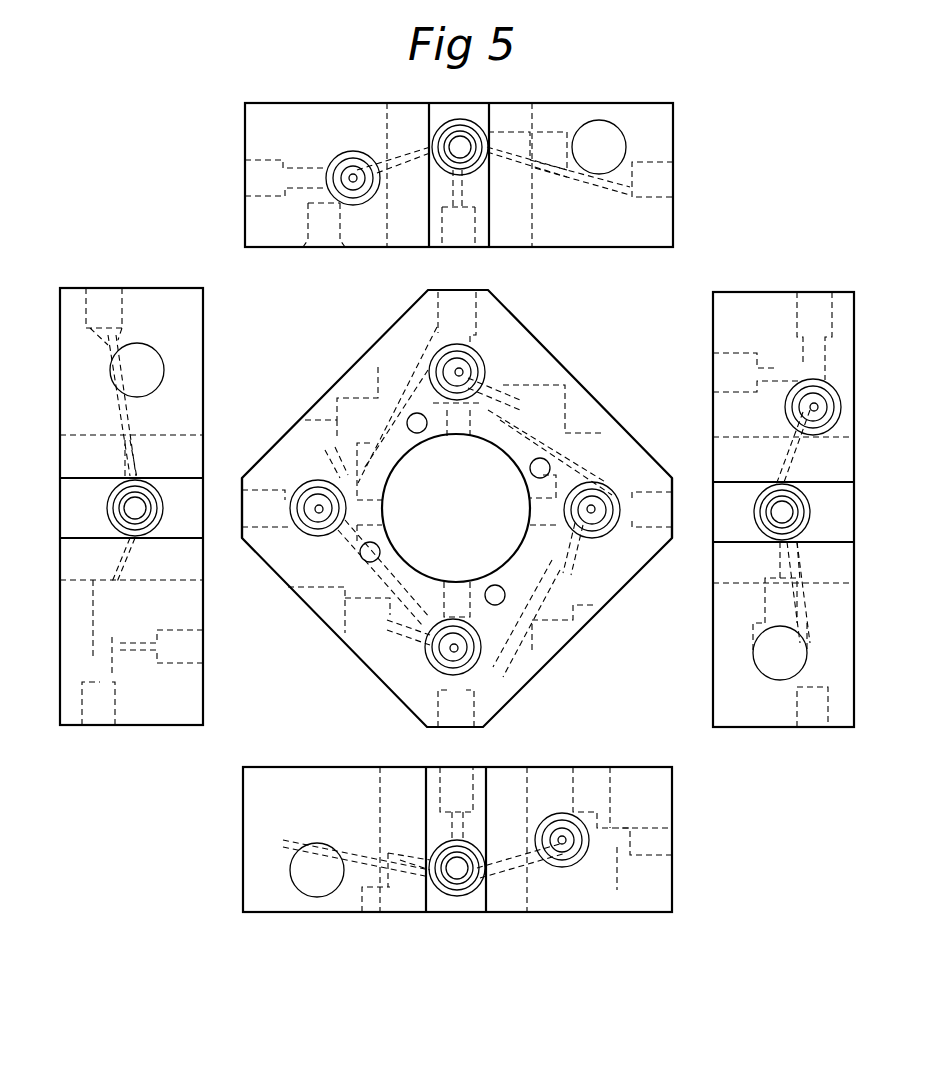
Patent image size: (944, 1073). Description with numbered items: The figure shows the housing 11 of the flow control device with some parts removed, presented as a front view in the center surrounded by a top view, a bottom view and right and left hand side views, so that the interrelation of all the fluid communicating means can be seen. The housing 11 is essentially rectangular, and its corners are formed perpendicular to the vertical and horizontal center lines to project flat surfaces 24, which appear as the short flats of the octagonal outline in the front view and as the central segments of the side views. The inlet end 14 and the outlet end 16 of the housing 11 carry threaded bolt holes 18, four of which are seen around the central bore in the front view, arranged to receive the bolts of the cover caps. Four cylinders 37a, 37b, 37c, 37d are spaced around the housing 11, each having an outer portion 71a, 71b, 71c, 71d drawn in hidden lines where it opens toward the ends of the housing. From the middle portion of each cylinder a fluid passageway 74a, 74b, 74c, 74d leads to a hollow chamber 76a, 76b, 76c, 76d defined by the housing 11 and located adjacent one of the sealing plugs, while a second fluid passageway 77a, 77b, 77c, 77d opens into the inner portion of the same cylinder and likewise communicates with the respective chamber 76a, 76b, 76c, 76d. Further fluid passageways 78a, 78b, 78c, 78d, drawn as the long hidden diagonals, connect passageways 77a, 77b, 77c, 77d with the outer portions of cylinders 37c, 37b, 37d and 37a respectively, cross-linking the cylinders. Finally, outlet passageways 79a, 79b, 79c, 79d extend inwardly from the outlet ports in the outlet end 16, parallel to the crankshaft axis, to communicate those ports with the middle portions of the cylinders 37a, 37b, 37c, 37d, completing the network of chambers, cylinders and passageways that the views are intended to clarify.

The housing 11 is at (646, 441).
The inlet end 14 is at (603, 106).
The outlet end 16 is at (592, 247).
The bolt holes 18 is at (410, 432).
The flat surfaces 24 is at (245, 128).
The cylinder 37a is at (470, 338).
The cylinder 37b is at (445, 680).
The cylinder 37c is at (620, 534).
The cylinder 37d is at (307, 145).
The outer portion 71a is at (478, 312).
The outer portion 71b is at (430, 708).
The outer portion 71c is at (660, 548).
The outer portion 71d is at (258, 468).
The fluid passageway 74a is at (515, 388).
The fluid passageway 74b is at (382, 632).
The fluid passageway 74c is at (575, 570).
The fluid passageway 74d is at (325, 462).
The hollow chamber 76a is at (553, 373).
The hollow chamber 76b is at (365, 660).
The hollow chamber 76c is at (598, 610).
The hollow chamber 76d is at (305, 420).
The fluid passageway 77a is at (140, 478).
The fluid passageway 77b is at (420, 640).
The fluid passageway 77c is at (580, 558).
The fluid passageway 77d is at (330, 472).
The fluid passageway 78a is at (585, 462).
The fluid passageway 78b is at (315, 555).
The fluid passageway 78c is at (505, 655).
The fluid passageway 78d is at (423, 368).
The outlet passageway 79a is at (483, 195).
The outlet passageway 79b is at (470, 828).
The outlet passageway 79c is at (605, 822).
The outlet passageway 79d is at (310, 200).